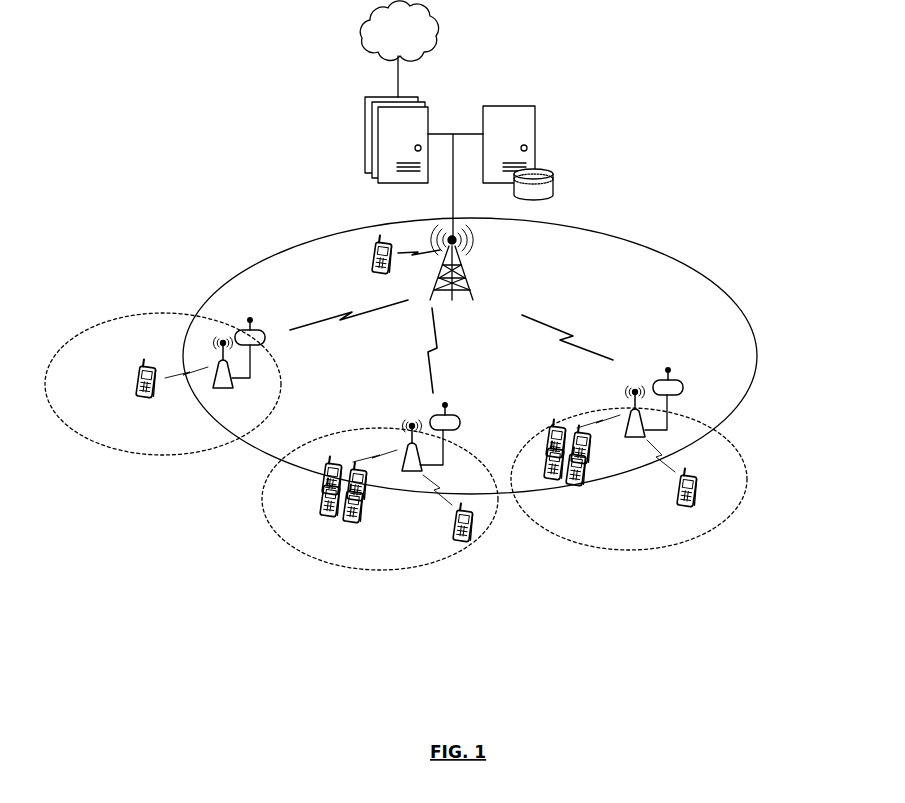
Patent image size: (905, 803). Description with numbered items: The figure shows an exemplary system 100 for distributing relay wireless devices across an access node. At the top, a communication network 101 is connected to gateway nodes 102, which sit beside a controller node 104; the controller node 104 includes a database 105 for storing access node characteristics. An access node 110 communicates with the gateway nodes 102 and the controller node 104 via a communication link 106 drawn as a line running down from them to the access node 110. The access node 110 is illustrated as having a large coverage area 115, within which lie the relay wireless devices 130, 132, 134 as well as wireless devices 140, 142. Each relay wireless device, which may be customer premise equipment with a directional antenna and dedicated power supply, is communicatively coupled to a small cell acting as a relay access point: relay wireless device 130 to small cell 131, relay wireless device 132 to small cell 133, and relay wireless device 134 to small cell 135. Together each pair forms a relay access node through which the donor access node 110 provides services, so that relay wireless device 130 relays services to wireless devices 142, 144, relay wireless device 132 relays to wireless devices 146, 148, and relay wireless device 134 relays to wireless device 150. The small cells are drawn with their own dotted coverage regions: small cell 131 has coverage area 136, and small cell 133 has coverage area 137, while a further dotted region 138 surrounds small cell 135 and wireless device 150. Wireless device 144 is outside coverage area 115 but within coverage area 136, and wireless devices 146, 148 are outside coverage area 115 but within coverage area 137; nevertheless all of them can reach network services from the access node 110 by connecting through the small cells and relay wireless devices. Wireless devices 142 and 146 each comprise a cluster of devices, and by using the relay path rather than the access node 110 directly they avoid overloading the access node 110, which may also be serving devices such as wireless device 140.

The system 100 is at (480, 57).
The communication network 101 is at (399, 49).
The gateway nodes 102 is at (365, 108).
The controller node 104 is at (535, 121).
The database 105 is at (552, 170).
The communication link 106 is at (452, 197).
The access node 110 is at (461, 301).
The coverage area 115 is at (740, 290).
The relay wireless device 130 is at (680, 379).
The small cell 131 is at (630, 411).
The relay wireless device 132 is at (455, 413).
The small cell 133 is at (407, 442).
The relay wireless device 134 is at (264, 328).
The small cell 135 is at (216, 357).
The coverage area 136 is at (745, 500).
The coverage area 137 is at (460, 553).
The small cell coverage area 138 is at (161, 460).
The wireless device 140 is at (370, 262).
The cluster of wireless devices 142 is at (599, 463).
The wireless device 144 is at (683, 507).
The cluster of wireless devices 146 is at (375, 499).
The wireless device 148 is at (458, 538).
The wireless device 150 is at (140, 397).